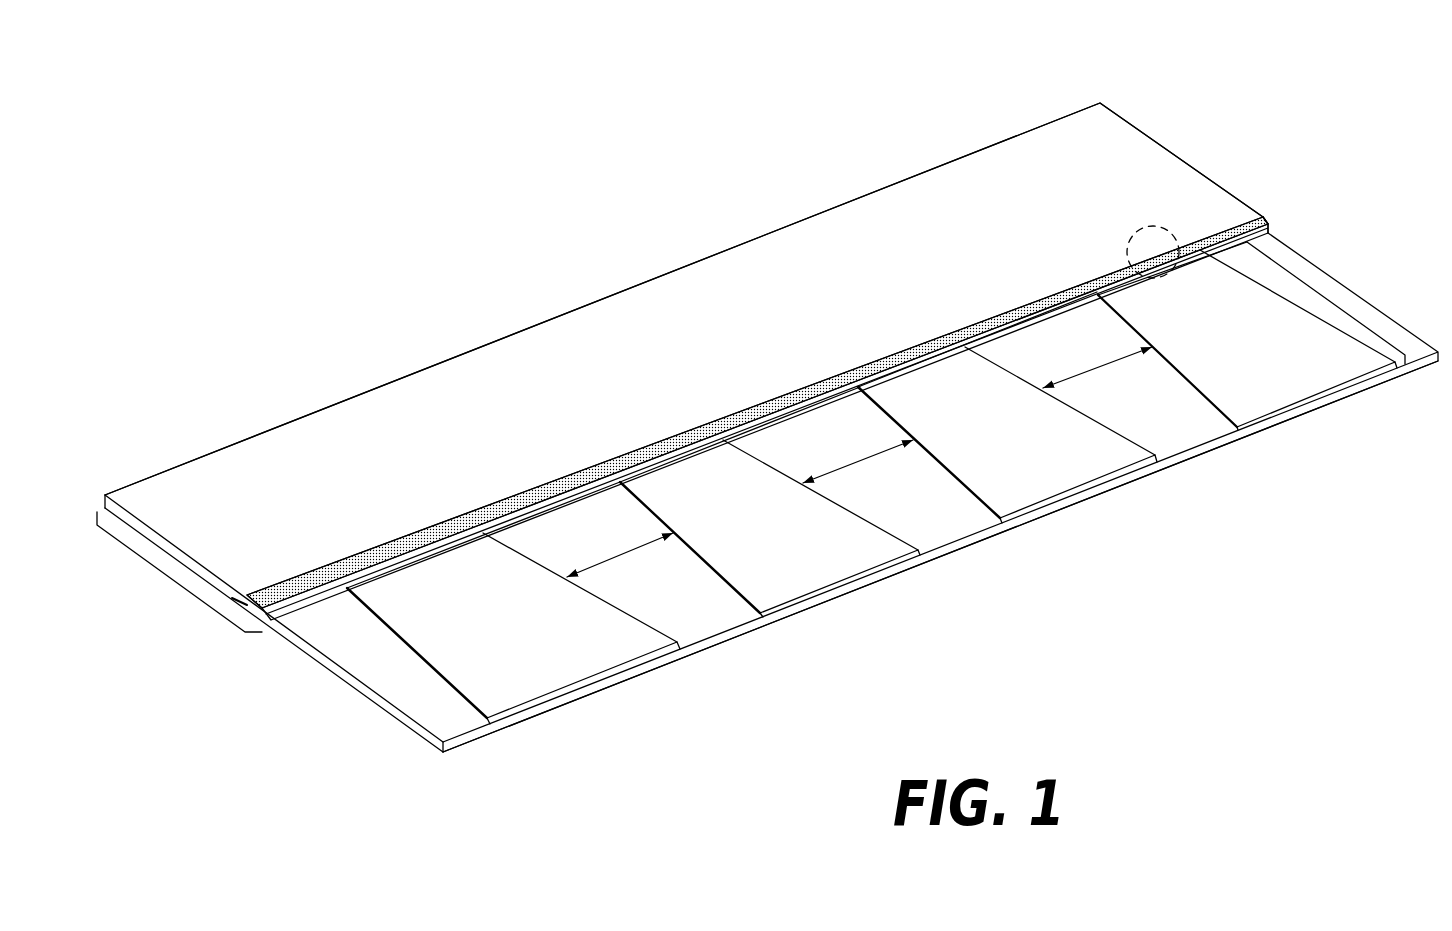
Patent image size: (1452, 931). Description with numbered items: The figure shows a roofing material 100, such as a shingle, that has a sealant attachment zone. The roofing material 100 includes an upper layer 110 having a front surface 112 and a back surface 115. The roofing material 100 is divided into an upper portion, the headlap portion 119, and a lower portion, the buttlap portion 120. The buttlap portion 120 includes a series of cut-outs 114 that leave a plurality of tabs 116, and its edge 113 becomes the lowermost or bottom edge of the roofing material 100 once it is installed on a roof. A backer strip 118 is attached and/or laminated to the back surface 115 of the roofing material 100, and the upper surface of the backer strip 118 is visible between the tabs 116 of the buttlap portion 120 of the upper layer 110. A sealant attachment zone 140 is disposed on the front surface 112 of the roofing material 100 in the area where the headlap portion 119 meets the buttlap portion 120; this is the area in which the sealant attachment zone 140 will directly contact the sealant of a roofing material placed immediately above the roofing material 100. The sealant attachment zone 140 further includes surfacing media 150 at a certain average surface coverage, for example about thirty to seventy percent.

The roofing material 100 is at (1254, 116).
The upper layer 110 is at (243, 436).
The front surface 112 is at (1137, 157).
The edge 113 is at (503, 730).
The cut-outs 114 is at (618, 558).
The back surface 115 is at (1178, 160).
The tabs 116 is at (572, 667).
The backer strip 118 is at (390, 711).
The headlap portion 119 is at (162, 572).
The buttlap portion 120 is at (1328, 277).
The sealant attachment zone 140 is at (1232, 217).
The surfacing media 150 is at (1159, 247).